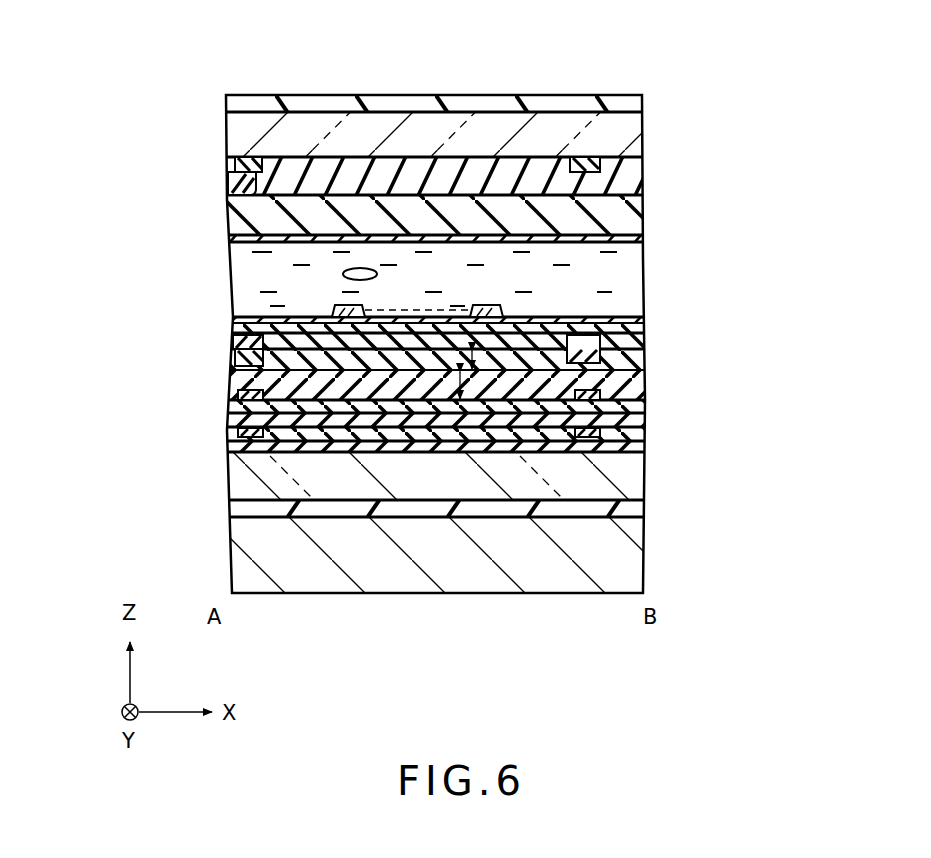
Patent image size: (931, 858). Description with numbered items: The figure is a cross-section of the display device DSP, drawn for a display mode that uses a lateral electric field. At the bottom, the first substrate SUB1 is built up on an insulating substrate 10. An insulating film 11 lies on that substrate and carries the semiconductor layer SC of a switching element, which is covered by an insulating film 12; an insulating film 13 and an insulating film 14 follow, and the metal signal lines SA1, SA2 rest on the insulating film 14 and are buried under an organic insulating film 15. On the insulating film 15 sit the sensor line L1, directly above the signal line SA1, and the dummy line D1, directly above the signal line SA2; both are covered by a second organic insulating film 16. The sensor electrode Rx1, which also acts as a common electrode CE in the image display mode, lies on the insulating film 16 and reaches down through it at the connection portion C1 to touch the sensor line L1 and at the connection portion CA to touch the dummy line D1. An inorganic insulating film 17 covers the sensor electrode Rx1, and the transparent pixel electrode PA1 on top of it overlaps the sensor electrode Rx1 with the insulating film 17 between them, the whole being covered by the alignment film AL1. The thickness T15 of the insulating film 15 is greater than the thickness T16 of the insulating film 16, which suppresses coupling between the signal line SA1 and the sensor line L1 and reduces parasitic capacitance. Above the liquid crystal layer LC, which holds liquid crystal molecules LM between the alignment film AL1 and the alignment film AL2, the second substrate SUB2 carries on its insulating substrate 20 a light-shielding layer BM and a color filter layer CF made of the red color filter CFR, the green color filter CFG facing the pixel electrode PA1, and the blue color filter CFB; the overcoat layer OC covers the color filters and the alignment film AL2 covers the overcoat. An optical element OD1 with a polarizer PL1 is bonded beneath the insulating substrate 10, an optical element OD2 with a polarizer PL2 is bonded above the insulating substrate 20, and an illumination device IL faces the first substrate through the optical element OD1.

The optical element OD2 is at (498, 105).
The polarizer PL2 is at (645, 100).
The insulating substrate 20 is at (640, 130).
The second substrate SUB2 is at (652, 171).
The overcoat layer OC is at (640, 215).
The alignment film AL2 is at (640, 240).
The liquid crystal layer LC is at (640, 270).
The alignment film AL1 is at (640, 318).
The insulating film 17 is at (640, 328).
The insulating film 16 is at (640, 343).
The first substrate SUB1 is at (652, 375).
The insulating film 15 is at (640, 392).
The insulating film 14 is at (640, 405).
The insulating film 13 is at (640, 420).
The insulating film 12 is at (640, 434).
The insulating film 11 is at (640, 447).
The insulating substrate 10 is at (640, 487).
The optical element OD1 is at (498, 521).
The polarizer PL1 is at (640, 510).
The illumination device IL is at (617, 578).
The display device DSP is at (645, 86).
The light-shielding layer BM is at (257, 167).
The color filter layer CF is at (221, 182).
The red color filter CFR is at (229, 176).
The green color filter CFG is at (438, 165).
The blue color filter CFB is at (622, 168).
The liquid crystal molecule LM is at (343, 274).
The pixel electrode PA1 is at (480, 303).
The sensor electrode Rx1 is at (190, 331).
The common electrode CE is at (250, 340).
The sensor line L1 is at (250, 366).
The connection portion C1 is at (263, 349).
The dummy line D1 is at (582, 360).
The connection portion CA is at (562, 349).
The signal line SA1 is at (258, 401).
The signal line SA2 is at (582, 401).
The semiconductor layer SC is at (252, 438).
The thickness T15 is at (476, 366).
The thickness T16 is at (458, 401).